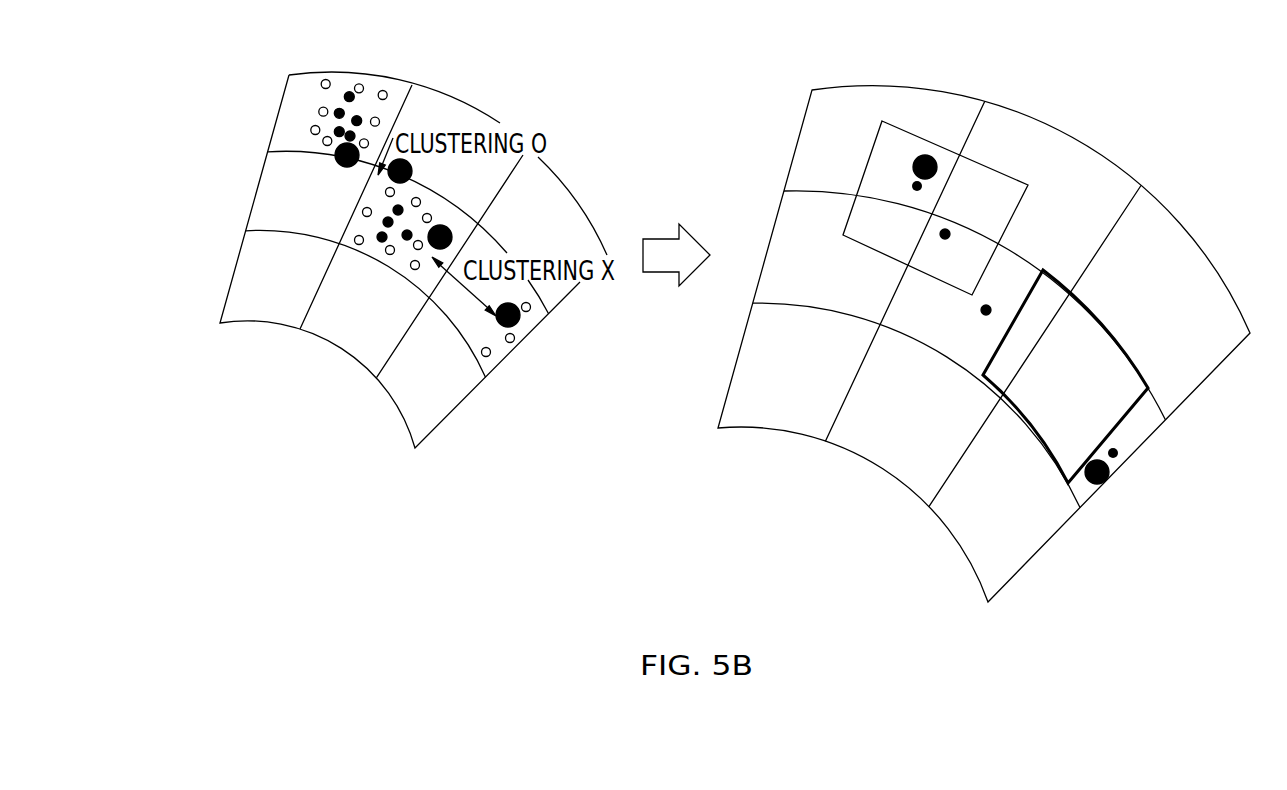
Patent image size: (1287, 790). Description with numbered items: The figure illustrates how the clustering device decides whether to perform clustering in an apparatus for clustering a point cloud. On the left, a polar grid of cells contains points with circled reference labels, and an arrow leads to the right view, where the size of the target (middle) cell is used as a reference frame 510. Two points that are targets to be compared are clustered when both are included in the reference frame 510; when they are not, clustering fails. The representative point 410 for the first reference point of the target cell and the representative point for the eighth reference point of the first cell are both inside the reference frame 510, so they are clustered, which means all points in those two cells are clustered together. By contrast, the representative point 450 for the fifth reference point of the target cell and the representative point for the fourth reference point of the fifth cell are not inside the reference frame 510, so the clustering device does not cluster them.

The representative point 410 is at (946, 240).
The representative point 450 is at (987, 304).
The reference frame 510 is at (1006, 168).